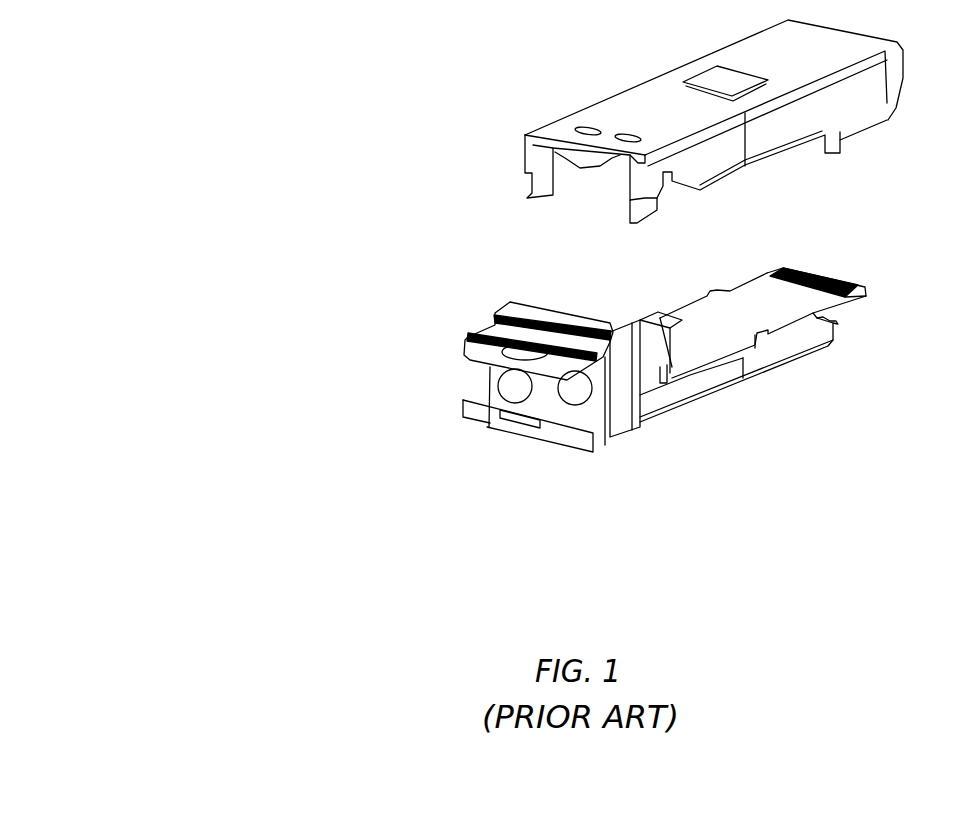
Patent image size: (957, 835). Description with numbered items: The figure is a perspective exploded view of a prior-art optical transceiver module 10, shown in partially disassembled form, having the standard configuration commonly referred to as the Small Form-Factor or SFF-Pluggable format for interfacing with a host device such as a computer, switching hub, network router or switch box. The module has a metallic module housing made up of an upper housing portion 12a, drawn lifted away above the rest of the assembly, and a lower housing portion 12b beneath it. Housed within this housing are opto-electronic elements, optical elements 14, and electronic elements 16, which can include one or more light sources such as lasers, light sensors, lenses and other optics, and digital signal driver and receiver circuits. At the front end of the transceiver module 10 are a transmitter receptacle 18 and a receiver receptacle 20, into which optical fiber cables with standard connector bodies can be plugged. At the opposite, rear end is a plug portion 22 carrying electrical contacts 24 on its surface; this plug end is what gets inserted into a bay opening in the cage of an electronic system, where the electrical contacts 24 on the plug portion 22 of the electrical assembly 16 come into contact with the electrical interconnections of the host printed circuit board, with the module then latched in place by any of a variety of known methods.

The optical transceiver module 10 is at (238, 78).
The upper housing portion 12a is at (622, 112).
The lower housing portion 12b is at (712, 424).
The optical elements 14 is at (653, 352).
The electronic elements 16 is at (712, 307).
The transmitter receptacle 18 is at (527, 393).
The receiver receptacle 20 is at (575, 394).
The plug portion 22 is at (864, 318).
The electrical contacts 24 is at (830, 276).